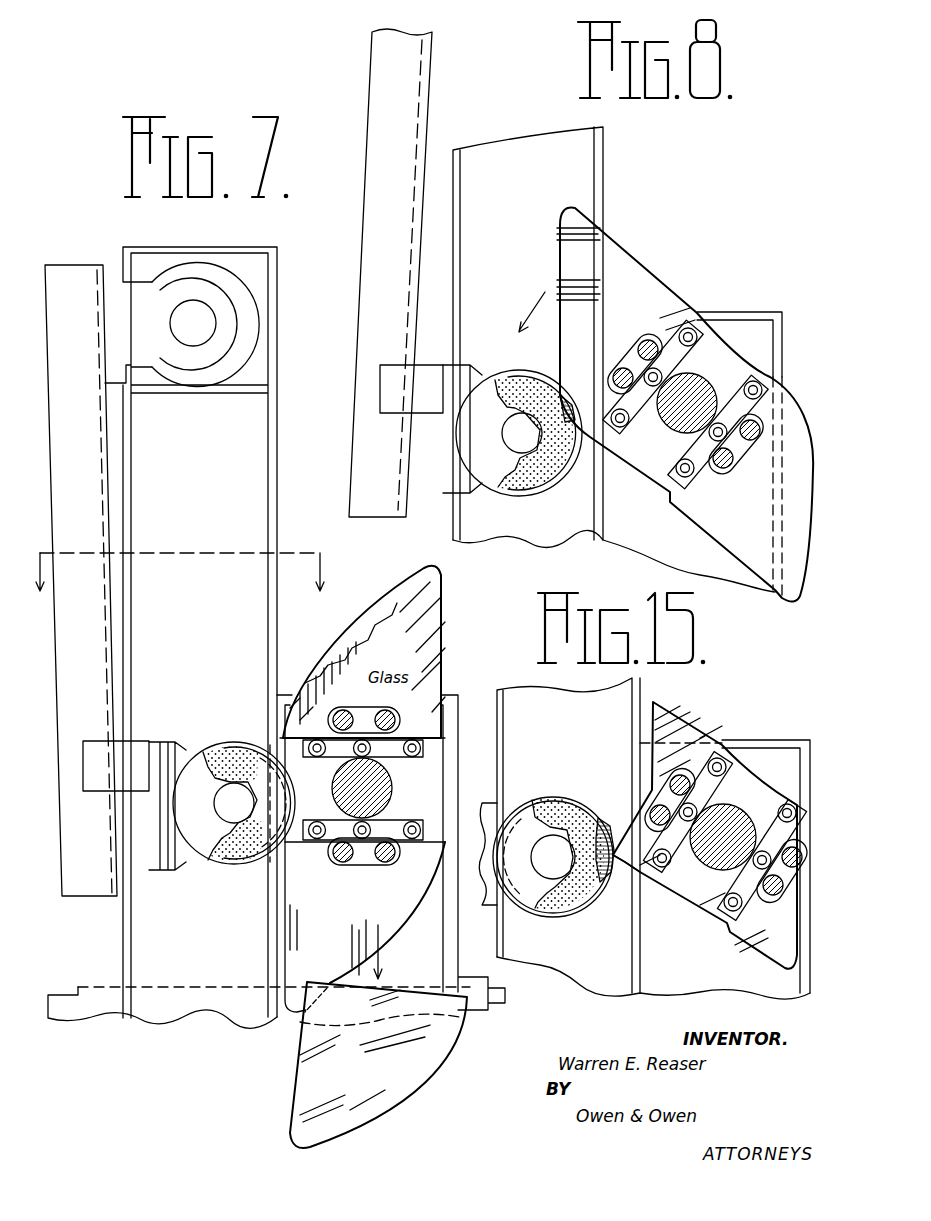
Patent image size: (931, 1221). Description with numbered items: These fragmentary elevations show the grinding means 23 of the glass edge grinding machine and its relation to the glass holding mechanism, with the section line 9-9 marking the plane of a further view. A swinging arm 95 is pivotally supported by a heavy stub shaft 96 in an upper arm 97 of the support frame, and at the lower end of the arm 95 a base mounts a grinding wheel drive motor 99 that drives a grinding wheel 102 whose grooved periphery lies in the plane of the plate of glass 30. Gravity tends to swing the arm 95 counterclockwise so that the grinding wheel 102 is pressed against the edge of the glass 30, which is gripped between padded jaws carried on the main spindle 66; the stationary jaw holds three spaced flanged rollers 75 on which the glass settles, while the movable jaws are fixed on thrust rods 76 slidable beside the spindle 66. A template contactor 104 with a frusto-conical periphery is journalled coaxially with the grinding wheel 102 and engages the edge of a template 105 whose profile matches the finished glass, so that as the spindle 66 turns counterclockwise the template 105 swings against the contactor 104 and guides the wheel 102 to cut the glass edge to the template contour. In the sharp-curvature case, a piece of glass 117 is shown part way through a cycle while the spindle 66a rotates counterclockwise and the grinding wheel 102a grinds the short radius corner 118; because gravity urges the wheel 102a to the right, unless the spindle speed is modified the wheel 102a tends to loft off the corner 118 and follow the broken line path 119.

In FIG. 7, the section line 9- 9 is at (174, 560).
In FIG. 7, the grinding means 23 is at (287, 638).
In FIG. 8, the grinding means 23 is at (438, 345).
In FIG. 7, the plate of glass 30 is at (442, 628).
In FIG. 8, the plate of glass 30 is at (632, 252).
In FIG. 7, the main spindle 66 is at (393, 787).
In FIG. 8, the main spindle 66 is at (660, 468).
In FIG. 15, the spindle 66a is at (708, 857).
In FIG. 7, the flanged rollers 75 is at (447, 745).
In FIG. 8, the flanged rollers 75 is at (704, 316).
In FIG. 7, the thrust rods 76 is at (395, 712).
In FIG. 8, the thrust rods 76 is at (648, 338).
In FIG. 15, the thrust rods 76 is at (782, 895).
In FIG. 7, the swinging arm 95 is at (52, 479).
In FIG. 8, the swinging arm 95 is at (428, 122).
In FIG. 7, the stub shaft 96 is at (213, 290).
In FIG. 7, the upper arm 97 is at (278, 433).
In FIG. 7, the grinding wheel drive motor 99 is at (192, 862).
In FIG. 8, the grinding wheel drive motor 99 is at (478, 488).
In FIG. 7, the grinding wheel 102 is at (259, 733).
In FIG. 8, the grinding wheel 102 is at (548, 362).
In FIG. 15, the grinding wheel 102a is at (566, 808).
In FIG. 7, the template contactor 104 is at (209, 750).
In FIG. 8, the template contactor 104 is at (505, 378).
In FIG. 7, the template 105 is at (370, 606).
In FIG. 8, the template 105 is at (727, 543).
In FIG. 15, the piece of glass 117 is at (710, 726).
In FIG. 15, the short radius corner 118 is at (627, 864).
In FIG. 15, the broken line path 119 is at (618, 832).